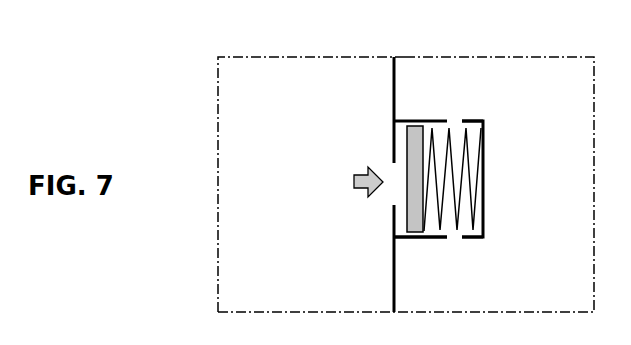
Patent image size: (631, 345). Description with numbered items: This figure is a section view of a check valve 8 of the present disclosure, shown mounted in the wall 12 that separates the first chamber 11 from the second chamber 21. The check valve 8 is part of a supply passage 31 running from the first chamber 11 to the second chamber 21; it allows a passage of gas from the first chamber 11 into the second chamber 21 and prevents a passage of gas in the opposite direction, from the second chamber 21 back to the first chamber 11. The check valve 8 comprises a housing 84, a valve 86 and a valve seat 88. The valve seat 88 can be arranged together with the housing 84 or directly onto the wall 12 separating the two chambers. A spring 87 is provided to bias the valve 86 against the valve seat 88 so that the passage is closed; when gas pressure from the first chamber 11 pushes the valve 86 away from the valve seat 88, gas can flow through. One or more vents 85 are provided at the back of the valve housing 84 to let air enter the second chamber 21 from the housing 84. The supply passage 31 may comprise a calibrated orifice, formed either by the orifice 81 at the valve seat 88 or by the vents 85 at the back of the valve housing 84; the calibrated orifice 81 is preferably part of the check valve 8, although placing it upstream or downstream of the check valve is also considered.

The check valve 8 is at (427, 120).
The first chamber 11 is at (272, 138).
The wall 12 is at (394, 83).
The second chamber 21 is at (537, 143).
The supply passage 31 is at (472, 94).
The calibrated orifice 81 is at (393, 189).
The housing 84 is at (484, 121).
The vents 85 is at (453, 238).
The valve 86 is at (415, 217).
The spring 87 is at (468, 164).
The valve seat 88 is at (394, 150).